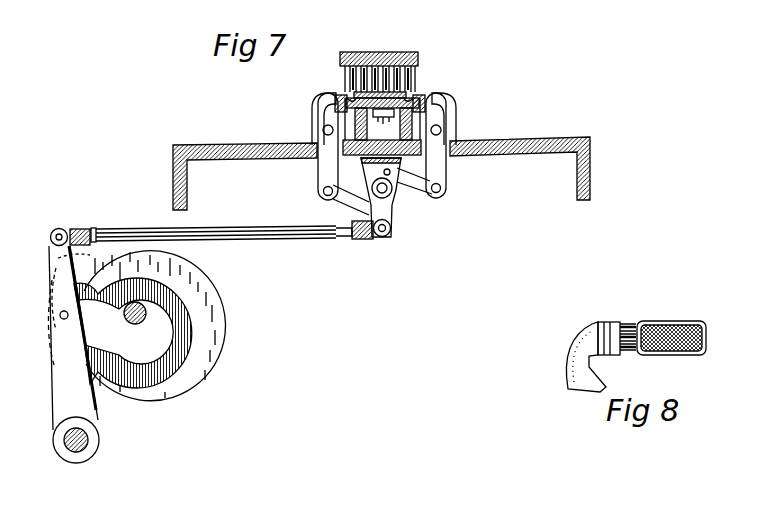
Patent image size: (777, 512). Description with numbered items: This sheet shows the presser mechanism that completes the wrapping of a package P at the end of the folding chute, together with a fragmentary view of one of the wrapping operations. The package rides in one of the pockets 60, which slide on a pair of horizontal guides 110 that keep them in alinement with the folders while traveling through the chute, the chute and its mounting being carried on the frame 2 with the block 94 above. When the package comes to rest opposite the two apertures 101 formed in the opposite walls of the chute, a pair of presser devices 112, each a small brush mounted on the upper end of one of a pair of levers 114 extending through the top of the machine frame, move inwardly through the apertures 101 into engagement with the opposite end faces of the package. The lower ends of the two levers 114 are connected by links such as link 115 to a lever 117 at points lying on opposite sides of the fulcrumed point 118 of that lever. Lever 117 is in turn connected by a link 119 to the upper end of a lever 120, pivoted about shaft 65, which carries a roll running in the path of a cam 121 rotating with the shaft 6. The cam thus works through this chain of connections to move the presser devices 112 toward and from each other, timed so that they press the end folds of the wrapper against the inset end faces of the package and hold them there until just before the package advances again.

In FIG. 7, the frame 2 is at (381, 173).
In FIG. 7, the brush holder block 94 is at (379, 58).
In FIG. 7, the pocket 60 is at (409, 97).
In FIG. 7, the horizontal guide 110 is at (382, 126).
In FIG. 7, the lever 114 is at (324, 168).
In FIG. 8, the lever 114 is at (580, 386).
In FIG. 7, the aperture 101 is at (337, 95).
In FIG. 7, the presser device 112 is at (333, 101).
In FIG. 8, the presser device 112 is at (612, 328).
In FIG. 7, the fulcrumed point 118 is at (372, 165).
In FIG. 7, the link 115 is at (414, 184).
In FIG. 7, the lever 117 is at (391, 227).
In FIG. 7, the link 119 is at (268, 240).
In FIG. 7, the lever 120 is at (52, 266).
In FIG. 7, the pivot shaft 65 is at (77, 452).
In FIG. 7, the cam 121 is at (196, 364).
In FIG. 7, the shaft 6 is at (135, 324).
In FIG. 8, the plate P is at (707, 326).